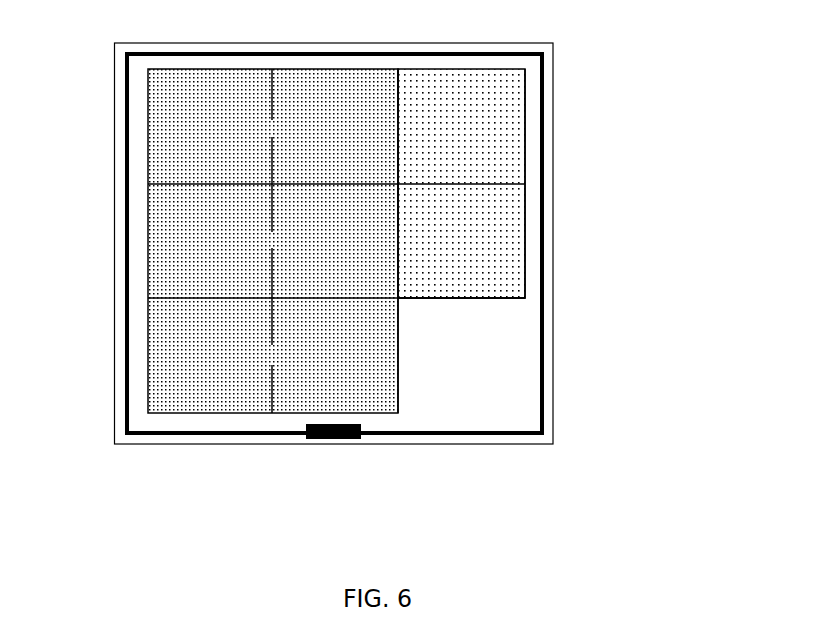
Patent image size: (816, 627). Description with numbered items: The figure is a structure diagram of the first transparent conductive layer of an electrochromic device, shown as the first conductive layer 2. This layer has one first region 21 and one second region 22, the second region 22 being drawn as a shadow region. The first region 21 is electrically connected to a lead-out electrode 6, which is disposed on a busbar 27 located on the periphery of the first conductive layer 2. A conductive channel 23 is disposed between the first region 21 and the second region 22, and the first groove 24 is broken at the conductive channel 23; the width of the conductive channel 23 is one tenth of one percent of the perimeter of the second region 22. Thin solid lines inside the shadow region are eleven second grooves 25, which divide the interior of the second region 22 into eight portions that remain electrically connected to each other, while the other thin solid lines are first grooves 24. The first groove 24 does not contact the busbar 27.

The first conductive layer 2 is at (310, 222).
The lead-out electrode 6 is at (325, 440).
The first region 21 is at (520, 347).
The second region 22 is at (495, 120).
The conductive channel 23 is at (398, 352).
The first groove 24 is at (525, 245).
The second grooves 25 is at (175, 187).
The busbar 27 is at (172, 433).